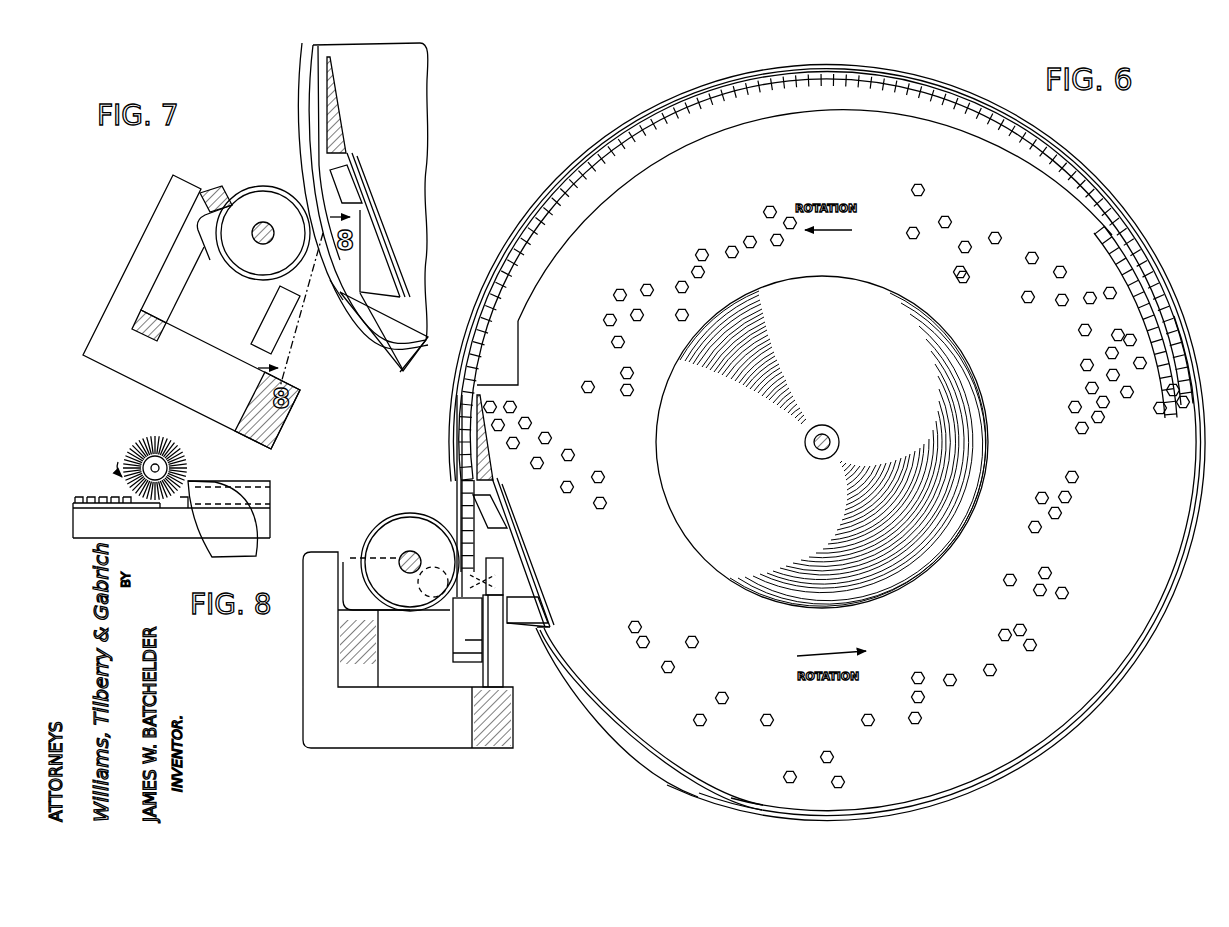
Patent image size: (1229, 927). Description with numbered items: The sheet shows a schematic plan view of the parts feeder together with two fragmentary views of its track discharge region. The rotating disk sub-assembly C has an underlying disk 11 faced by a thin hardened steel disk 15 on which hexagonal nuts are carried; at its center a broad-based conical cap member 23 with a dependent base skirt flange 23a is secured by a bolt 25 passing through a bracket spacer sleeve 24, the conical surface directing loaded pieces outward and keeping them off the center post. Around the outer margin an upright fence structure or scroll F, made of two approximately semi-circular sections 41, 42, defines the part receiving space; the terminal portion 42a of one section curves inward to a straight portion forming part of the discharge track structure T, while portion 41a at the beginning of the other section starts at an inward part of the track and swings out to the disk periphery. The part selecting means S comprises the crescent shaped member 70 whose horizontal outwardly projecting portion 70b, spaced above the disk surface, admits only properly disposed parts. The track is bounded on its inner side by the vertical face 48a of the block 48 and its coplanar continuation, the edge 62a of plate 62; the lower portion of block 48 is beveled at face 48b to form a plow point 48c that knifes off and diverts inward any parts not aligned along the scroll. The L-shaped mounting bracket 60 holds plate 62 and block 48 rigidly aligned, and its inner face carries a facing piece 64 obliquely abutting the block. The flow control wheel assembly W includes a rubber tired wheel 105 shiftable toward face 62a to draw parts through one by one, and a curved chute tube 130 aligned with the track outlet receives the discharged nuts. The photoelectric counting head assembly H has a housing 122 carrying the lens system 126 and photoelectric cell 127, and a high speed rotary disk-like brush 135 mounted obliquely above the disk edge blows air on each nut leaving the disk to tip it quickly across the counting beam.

In FIG. 6, the disk 11 is at (626, 760).
In FIG. 7, the disk 11 is at (298, 68).
In FIG. 6, the hardened steel disk 15 is at (757, 651).
In FIG. 7, the hardened steel disk 15 is at (305, 87).
In FIG. 6, the conical cap member 23 is at (730, 549).
In FIG. 6, the base skirt flange 23a is at (895, 600).
In FIG. 6, the bracket spacer sleeve 24 is at (820, 462).
In FIG. 6, the bolt 25 is at (834, 432).
In FIG. 6, the fence section 41 is at (1150, 680).
In FIG. 7, the fence section 41 is at (427, 343).
In FIG. 6, the fence section beginning portion 41a is at (555, 651).
In FIG. 6, the fence section 42 is at (1064, 146).
In FIG. 7, the fence section 42 is at (300, 50).
In FIG. 8, the terminal portion of fence 42a is at (457, 420).
In FIG. 7, the terminal portion of fence 42a is at (313, 111).
In FIG. 8, the block 48 is at (466, 447).
In FIG. 7, the block 48 is at (351, 127).
In FIG. 8, the vertical face of block 48a is at (478, 452).
In FIG. 7, the vertical face of block 48a is at (330, 134).
In FIG. 6, the beveled vertical face 48b is at (522, 434).
In FIG. 7, the beveled vertical face 48b is at (335, 92).
In FIG. 6, the plow point 48c is at (498, 392).
In FIG. 8, the L-shaped mounting bracket 60 is at (533, 607).
In FIG. 7, the L-shaped mounting bracket 60 is at (395, 173).
In FIG. 8, the plate 62 is at (494, 488).
In FIG. 8, the vertical face of plate 62a is at (463, 500).
In FIG. 8, the facing piece 64 is at (518, 542).
In FIG. 7, the facing piece 64 is at (388, 248).
In FIG. 6, the selector member 70 is at (524, 326).
In FIG. 7, the selector member 70 is at (405, 49).
In FIG. 6, the horizontal outwardly projecting portion 70b is at (560, 240).
In FIG. 8, the rubber tired wheel 105 is at (368, 546).
In FIG. 7, the rubber tired wheel 105 is at (247, 182).
In FIG. 8, the housing 122 is at (301, 737).
In FIG. 7, the housing 122 is at (152, 250).
In FIG. 8, the lens system 126 is at (436, 606).
In FIG. 8, the photoelectric cell 127 is at (502, 572).
In FIG. 7, the photoelectric cell 127 is at (337, 298).
In FIG. 8, the curved chute tube 130 is at (453, 654).
In FIG. 7, the curved chute tube 130 is at (278, 318).
In FIG. 8, the rotary disk-like brush 135 is at (172, 452).
In FIG. 7, the rotary disk-like brush 135 is at (320, 253).
In FIG. 6, the rotating disk sub-assembly C is at (1165, 627).
In FIG. 6, the fence structure or scroll F is at (583, 722).
In FIG. 8, the photoelectric counting head assembly H is at (512, 584).
In FIG. 6, the part selecting means S is at (618, 197).
In FIG. 8, the discharge track structure T is at (484, 523).
In FIG. 7, the discharge track structure T is at (360, 163).
In FIG. 8, the flow control wheel assembly W is at (370, 514).